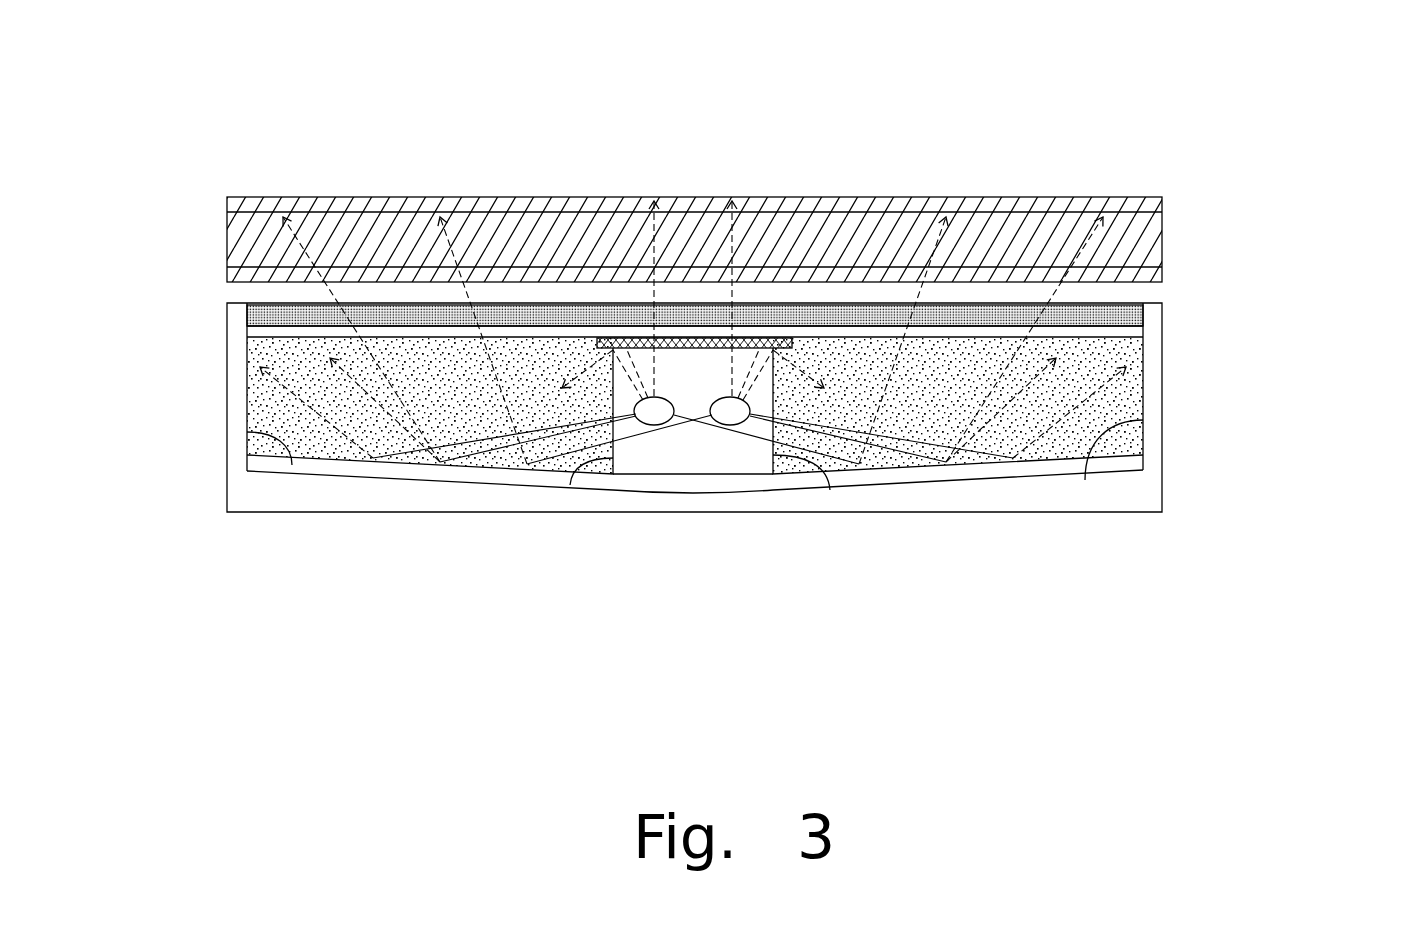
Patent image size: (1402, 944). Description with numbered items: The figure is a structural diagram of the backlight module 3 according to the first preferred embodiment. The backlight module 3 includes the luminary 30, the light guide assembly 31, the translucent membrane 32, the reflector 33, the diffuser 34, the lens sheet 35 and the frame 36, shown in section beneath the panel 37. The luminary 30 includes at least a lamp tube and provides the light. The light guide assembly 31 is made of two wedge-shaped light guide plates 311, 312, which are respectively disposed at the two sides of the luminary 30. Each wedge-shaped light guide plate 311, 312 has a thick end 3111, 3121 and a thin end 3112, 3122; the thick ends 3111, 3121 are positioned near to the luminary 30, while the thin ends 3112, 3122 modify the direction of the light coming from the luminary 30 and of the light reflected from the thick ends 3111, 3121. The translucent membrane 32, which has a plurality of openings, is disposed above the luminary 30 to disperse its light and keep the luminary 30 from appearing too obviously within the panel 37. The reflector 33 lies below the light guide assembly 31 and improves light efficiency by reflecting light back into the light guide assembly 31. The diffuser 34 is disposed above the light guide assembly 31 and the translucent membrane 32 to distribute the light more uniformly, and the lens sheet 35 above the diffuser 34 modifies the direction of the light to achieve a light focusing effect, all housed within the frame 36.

The backlight module 3 is at (333, 135).
The luminary 30 is at (727, 425).
The light guide assembly 31 is at (687, 514).
The wedge-shaped light guide plate 311 is at (1108, 393).
The thick end 3111 is at (830, 490).
The thin end 3112 is at (1109, 525).
The wedge-shaped light guide plate 312 is at (278, 405).
The thick end 3121 is at (570, 485).
The thin end 3122 is at (292, 465).
The translucent membrane 32 is at (762, 338).
The reflector 33 is at (1123, 460).
The diffuser 34 is at (1130, 332).
The lens sheet 35 is at (1113, 313).
The frame 36 is at (1123, 493).
The panel 37 is at (1167, 238).